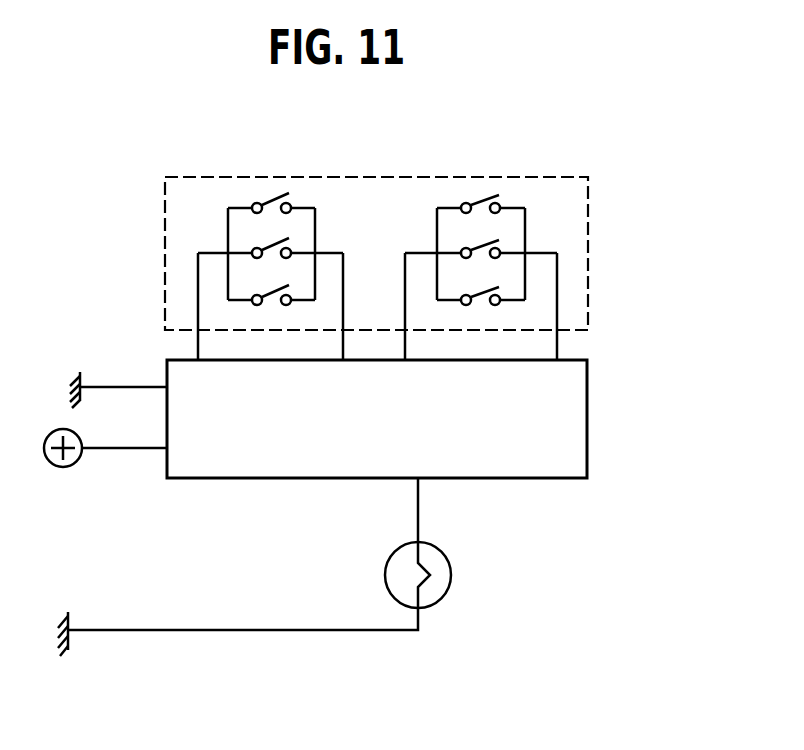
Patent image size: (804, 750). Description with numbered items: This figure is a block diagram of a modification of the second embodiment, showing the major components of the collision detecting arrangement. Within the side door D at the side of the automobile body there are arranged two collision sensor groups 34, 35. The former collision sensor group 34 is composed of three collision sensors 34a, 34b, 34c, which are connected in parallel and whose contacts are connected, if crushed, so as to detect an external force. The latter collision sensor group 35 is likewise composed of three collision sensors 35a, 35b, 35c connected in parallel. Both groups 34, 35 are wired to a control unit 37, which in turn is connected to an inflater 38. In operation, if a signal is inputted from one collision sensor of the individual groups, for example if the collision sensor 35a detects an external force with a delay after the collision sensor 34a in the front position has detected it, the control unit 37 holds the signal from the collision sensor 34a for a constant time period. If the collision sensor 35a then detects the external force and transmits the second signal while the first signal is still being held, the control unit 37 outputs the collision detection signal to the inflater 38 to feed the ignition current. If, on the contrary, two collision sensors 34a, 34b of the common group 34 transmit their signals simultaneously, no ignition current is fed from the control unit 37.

The collision sensor group 34 is at (225, 242).
The collision sensor 34a is at (263, 200).
The collision sensor 34b is at (268, 241).
The collision sensor 34c is at (262, 290).
The collision sensor group 35 is at (528, 245).
The collision sensor 35a is at (499, 202).
The collision sensor 35b is at (497, 247).
The collision sensor 35c is at (497, 295).
The control unit 37 is at (574, 408).
The inflater 38 is at (452, 574).
The side door D is at (590, 190).